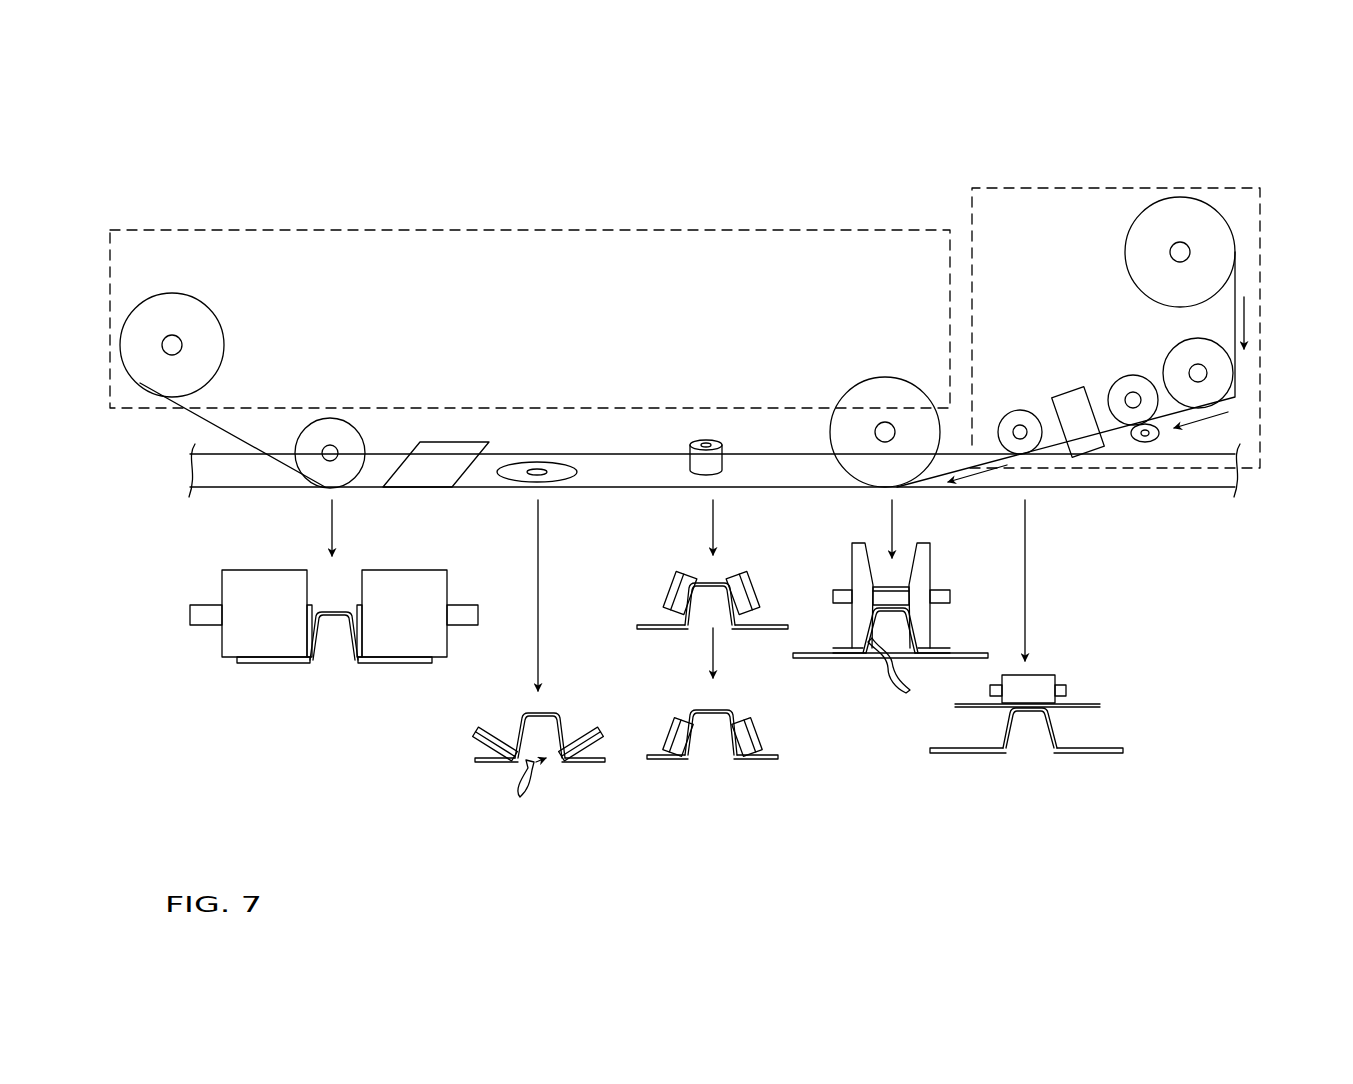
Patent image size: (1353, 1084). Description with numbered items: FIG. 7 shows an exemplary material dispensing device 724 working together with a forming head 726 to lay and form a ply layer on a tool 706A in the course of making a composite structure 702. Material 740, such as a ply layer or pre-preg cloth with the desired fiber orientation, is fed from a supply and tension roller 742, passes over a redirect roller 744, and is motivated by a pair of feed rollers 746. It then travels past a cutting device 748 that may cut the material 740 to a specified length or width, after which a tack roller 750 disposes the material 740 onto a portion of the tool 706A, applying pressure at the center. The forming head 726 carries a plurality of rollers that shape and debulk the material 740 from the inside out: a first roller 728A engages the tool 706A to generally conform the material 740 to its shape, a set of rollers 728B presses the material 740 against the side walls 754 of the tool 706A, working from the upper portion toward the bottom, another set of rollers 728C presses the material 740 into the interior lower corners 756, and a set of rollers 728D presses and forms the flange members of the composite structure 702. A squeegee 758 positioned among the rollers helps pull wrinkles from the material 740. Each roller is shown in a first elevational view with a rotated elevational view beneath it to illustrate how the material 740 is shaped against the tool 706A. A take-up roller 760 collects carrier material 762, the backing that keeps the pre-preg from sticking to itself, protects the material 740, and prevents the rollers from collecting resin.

The composite structure 702 is at (272, 504).
The tool 706A is at (1000, 487).
The material dispensing device 724 is at (1086, 142).
The forming head 726 is at (366, 199).
The first roller 728A is at (905, 380).
The set of rollers 728B is at (708, 440).
The set of rollers 728C is at (557, 472).
The set of rollers 728D is at (343, 420).
The material 740 is at (1237, 293).
The supply and tension roller 742 is at (1210, 205).
The redirect roller 744 is at (1233, 390).
The feed rollers 746 is at (1115, 385).
The cutting device 748 is at (1093, 455).
The tack roller 750 is at (1030, 413).
The side walls 754 is at (902, 680).
The interior lower corners 756 is at (519, 791).
The squeegee 758 is at (460, 442).
The take-up roller 760 is at (217, 318).
The carrier material 762 is at (190, 410).